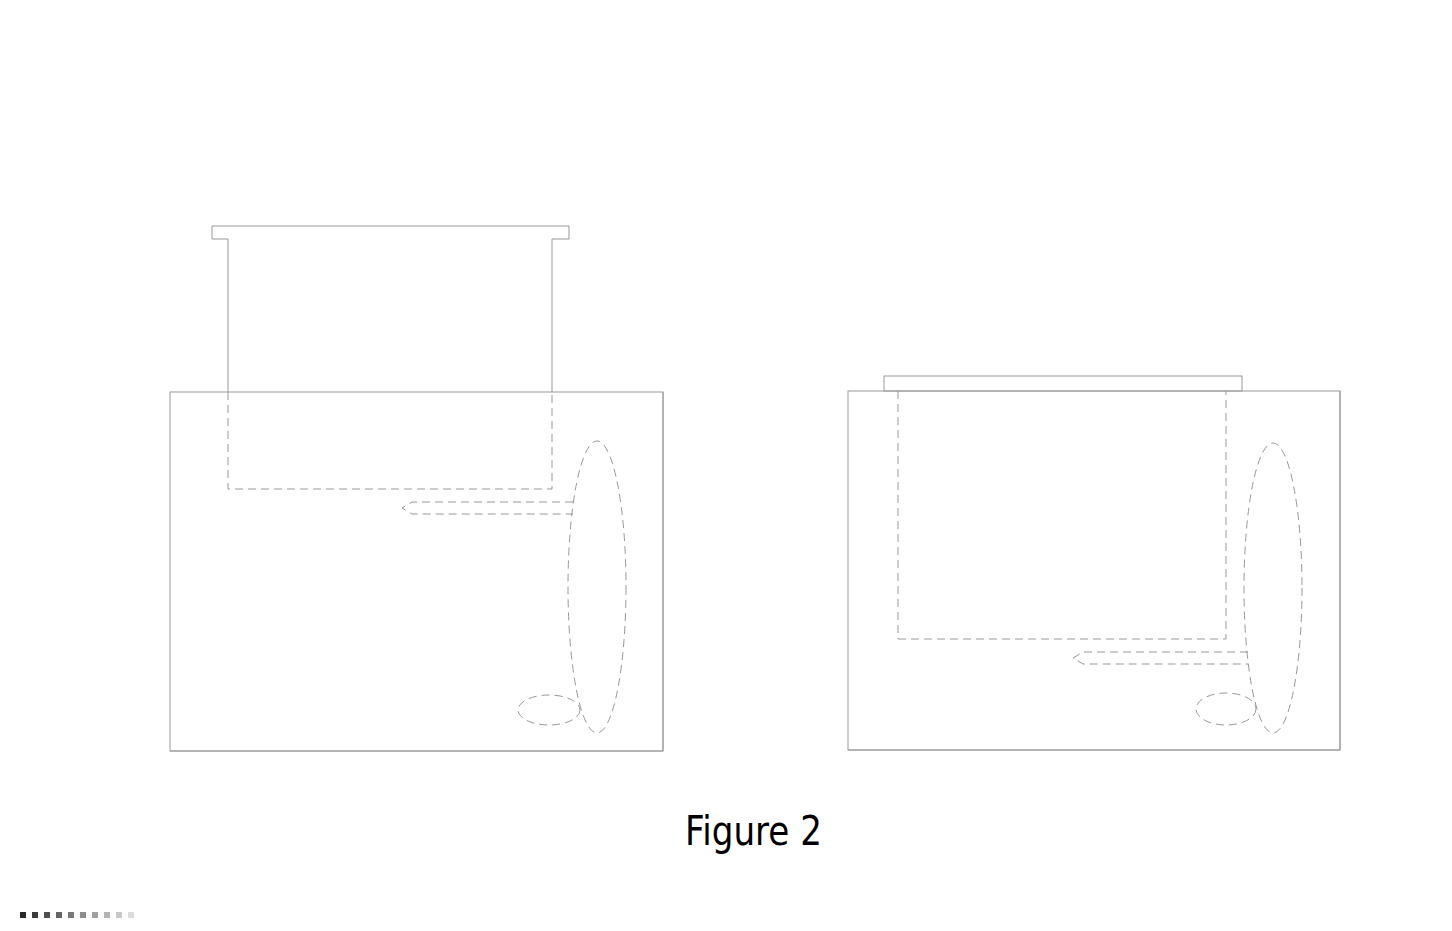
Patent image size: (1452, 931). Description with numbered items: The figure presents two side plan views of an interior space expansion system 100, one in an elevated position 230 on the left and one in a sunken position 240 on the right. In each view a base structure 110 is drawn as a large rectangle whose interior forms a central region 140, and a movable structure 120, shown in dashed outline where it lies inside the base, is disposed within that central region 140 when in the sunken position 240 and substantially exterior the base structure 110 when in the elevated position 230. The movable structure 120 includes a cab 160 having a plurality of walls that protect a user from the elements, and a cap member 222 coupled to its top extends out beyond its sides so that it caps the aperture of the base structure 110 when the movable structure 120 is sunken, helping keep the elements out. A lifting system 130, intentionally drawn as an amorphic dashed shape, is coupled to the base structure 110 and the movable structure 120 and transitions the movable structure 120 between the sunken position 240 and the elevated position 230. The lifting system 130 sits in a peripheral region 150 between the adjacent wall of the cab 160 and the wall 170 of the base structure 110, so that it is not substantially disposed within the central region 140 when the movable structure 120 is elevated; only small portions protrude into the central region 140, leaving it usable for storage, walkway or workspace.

The interior space expansion system 100 is at (1098, 81).
The base structure 110 is at (721, 571).
The movable structure 120 is at (759, 392).
The lifting system 130 is at (941, 537).
The central region 140 is at (755, 782).
The peripheral region 150 is at (903, 515).
The cab 160 is at (760, 439).
The wall of the base structure 170 is at (1036, 571).
The cap member 222 is at (759, 268).
The elevated position 230 is at (720, 172).
The sunken position 240 is at (1374, 175).